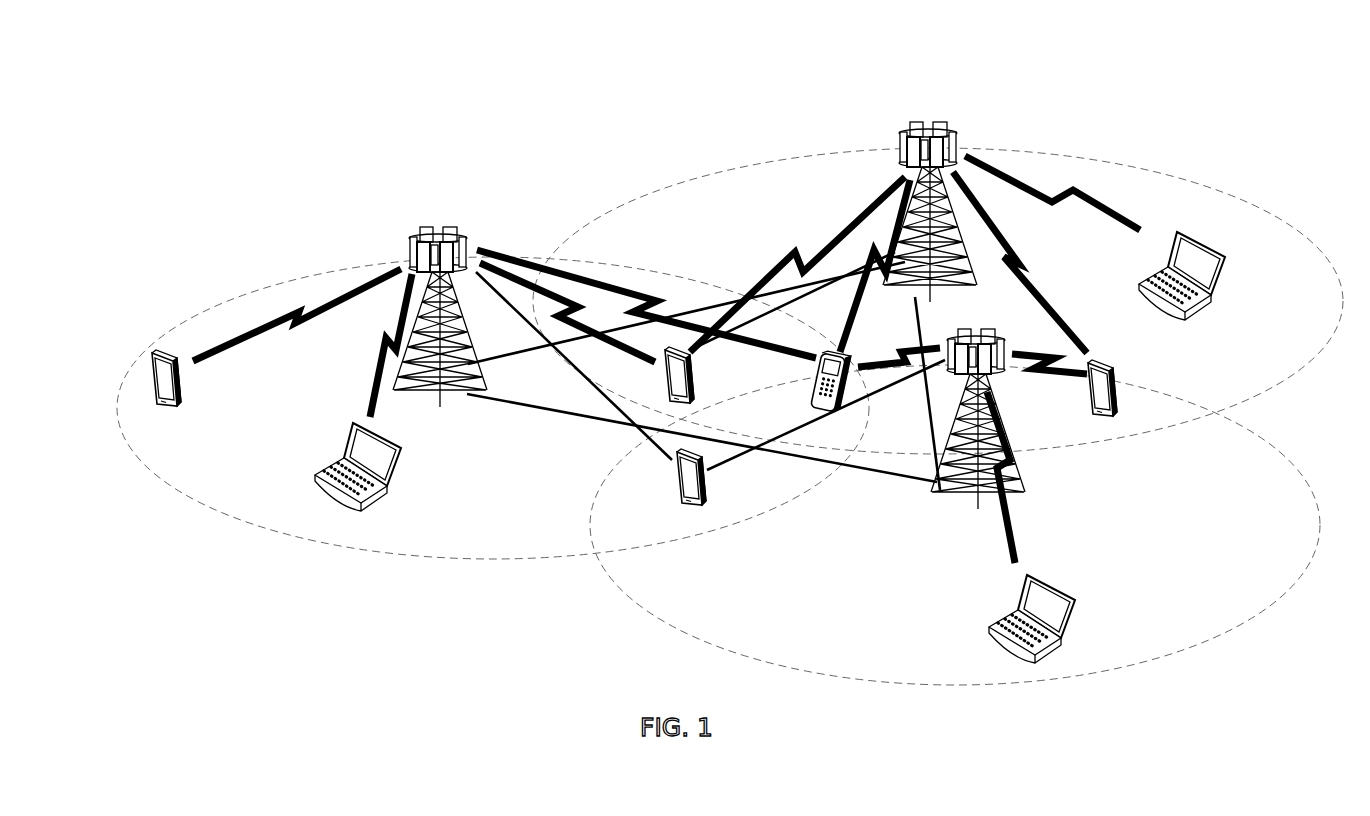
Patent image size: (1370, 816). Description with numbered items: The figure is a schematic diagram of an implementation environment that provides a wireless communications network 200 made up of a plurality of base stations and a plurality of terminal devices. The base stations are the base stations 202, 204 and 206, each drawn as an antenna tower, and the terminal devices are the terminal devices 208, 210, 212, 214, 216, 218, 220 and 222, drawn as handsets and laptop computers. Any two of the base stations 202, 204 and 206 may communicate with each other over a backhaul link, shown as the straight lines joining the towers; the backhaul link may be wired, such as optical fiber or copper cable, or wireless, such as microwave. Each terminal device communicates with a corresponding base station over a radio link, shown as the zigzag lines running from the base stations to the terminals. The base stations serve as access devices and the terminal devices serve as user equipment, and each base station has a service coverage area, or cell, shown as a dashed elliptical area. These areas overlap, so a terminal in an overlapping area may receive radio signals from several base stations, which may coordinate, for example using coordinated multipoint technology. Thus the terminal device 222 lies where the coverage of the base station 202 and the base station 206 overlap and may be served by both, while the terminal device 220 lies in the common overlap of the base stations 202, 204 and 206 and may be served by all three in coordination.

The wireless communications network 200 is at (730, 371).
The base station 202 is at (430, 226).
The base station 204 is at (966, 326).
The base station 206 is at (942, 120).
The terminal device 208 is at (180, 380).
The terminal device 210 is at (402, 446).
The terminal device 212 is at (677, 472).
The terminal device 214 is at (1075, 596).
The terminal device 216 is at (1115, 380).
The terminal device 218 is at (1215, 262).
The terminal device 220 is at (825, 392).
The terminal device 222 is at (690, 370).